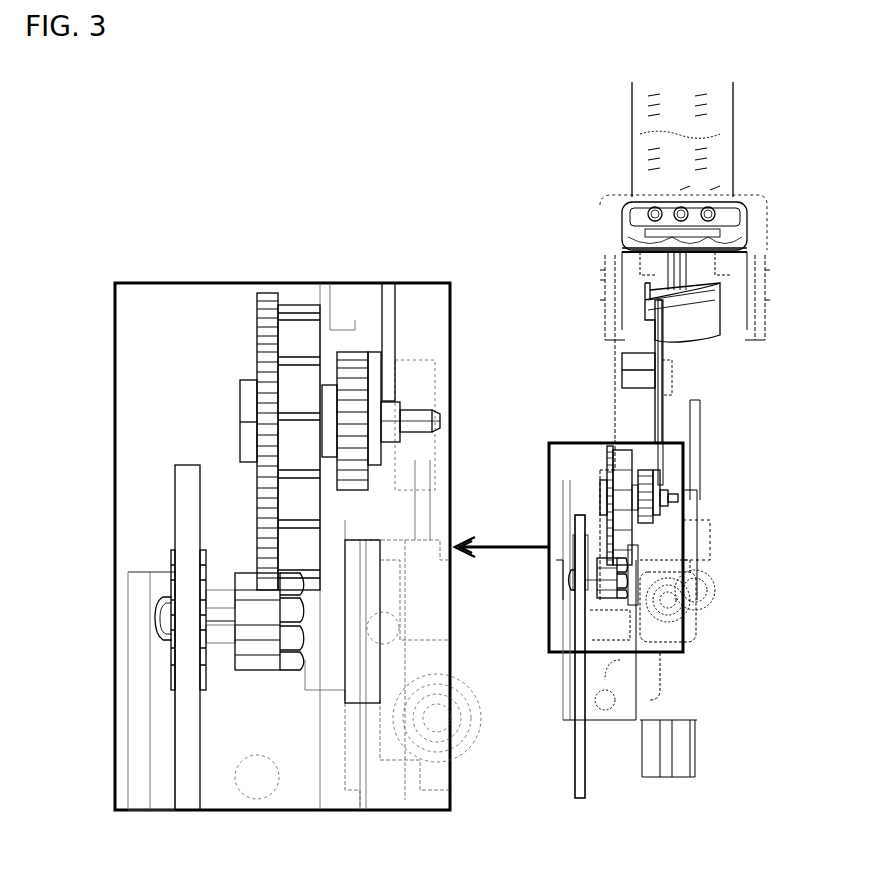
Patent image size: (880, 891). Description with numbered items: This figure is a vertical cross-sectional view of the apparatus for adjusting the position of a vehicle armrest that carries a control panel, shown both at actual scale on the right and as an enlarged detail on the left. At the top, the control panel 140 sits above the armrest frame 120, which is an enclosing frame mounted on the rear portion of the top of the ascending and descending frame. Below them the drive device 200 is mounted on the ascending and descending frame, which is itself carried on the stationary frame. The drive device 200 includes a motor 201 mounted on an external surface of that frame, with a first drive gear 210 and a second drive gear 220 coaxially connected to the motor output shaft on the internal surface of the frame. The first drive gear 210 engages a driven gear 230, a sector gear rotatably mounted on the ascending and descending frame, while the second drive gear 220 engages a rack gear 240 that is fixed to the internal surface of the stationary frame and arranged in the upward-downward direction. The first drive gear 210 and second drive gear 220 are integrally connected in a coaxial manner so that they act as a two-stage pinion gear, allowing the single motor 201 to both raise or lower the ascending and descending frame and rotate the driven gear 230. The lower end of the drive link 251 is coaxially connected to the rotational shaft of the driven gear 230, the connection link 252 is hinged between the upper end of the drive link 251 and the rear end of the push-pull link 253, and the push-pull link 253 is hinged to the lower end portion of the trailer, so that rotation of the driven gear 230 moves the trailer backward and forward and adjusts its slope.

The armrest frame 120 is at (615, 200).
The control panel 140 is at (640, 124).
The drive device 200 is at (684, 465).
The motor 201 is at (695, 600).
The first drive gear 210 is at (248, 604).
The second drive gear 220 is at (168, 563).
The driven gear 230 is at (260, 495).
The rack gear 240 is at (185, 505).
The drive link 251 is at (372, 370).
The connection link 252 is at (392, 324).
The push-pull link 253 is at (662, 348).